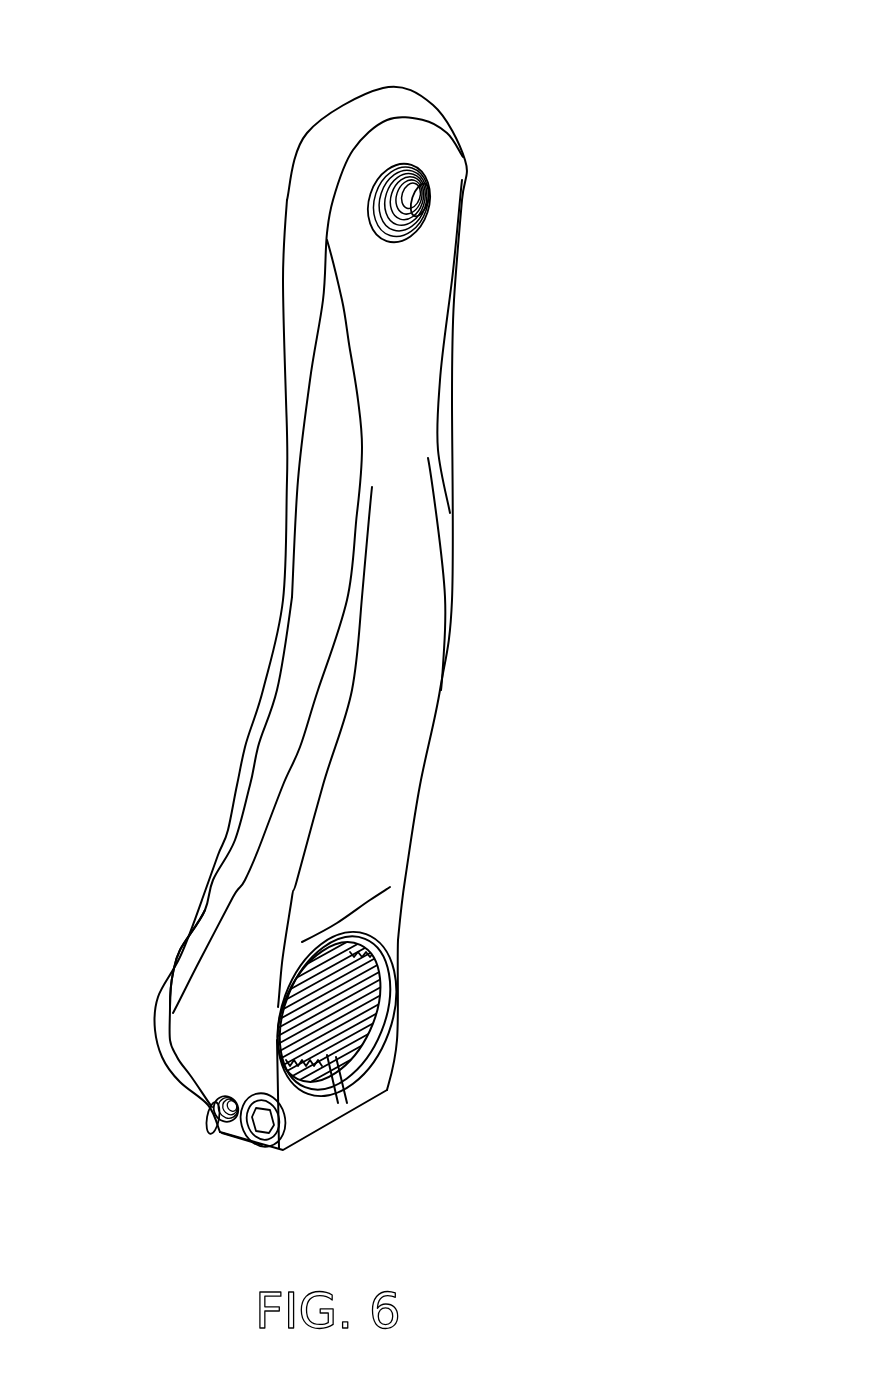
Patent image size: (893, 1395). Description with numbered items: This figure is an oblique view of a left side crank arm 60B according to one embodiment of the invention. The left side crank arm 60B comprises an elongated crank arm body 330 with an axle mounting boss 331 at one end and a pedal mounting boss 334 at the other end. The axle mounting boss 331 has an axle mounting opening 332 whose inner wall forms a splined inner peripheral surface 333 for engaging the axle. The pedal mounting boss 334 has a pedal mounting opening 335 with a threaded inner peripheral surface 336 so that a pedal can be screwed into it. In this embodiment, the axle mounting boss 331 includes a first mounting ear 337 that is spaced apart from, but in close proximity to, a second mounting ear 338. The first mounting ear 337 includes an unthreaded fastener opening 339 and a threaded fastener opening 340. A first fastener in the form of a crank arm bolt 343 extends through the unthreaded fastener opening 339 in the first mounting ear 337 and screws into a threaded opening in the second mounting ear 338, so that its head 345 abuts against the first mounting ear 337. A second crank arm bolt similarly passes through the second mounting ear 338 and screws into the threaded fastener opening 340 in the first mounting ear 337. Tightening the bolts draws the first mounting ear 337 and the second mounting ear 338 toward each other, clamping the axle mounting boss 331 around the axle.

The left side crank arm 60B is at (171, 443).
The crank arm body 330 is at (312, 608).
The axle mounting boss 331 is at (212, 1013).
The axle mounting opening 332 is at (392, 962).
The splined inner peripheral surface 333 is at (385, 977).
The pedal mounting boss 334 is at (318, 168).
The pedal mounting opening 335 is at (390, 167).
The threaded inner peripheral surface 336 is at (425, 187).
The first mounting ear 337 is at (310, 1122).
The second mounting ear 338 is at (377, 1085).
The unthreaded fastener opening 339 is at (275, 1148).
The threaded fastener opening 340 is at (212, 1107).
The crank arm bolt 343 is at (221, 1137).
The head 345 is at (258, 1147).